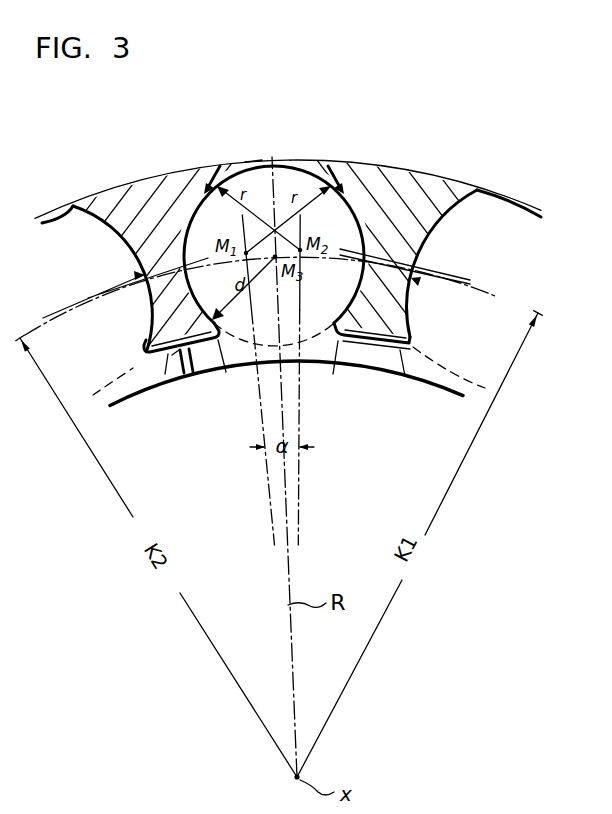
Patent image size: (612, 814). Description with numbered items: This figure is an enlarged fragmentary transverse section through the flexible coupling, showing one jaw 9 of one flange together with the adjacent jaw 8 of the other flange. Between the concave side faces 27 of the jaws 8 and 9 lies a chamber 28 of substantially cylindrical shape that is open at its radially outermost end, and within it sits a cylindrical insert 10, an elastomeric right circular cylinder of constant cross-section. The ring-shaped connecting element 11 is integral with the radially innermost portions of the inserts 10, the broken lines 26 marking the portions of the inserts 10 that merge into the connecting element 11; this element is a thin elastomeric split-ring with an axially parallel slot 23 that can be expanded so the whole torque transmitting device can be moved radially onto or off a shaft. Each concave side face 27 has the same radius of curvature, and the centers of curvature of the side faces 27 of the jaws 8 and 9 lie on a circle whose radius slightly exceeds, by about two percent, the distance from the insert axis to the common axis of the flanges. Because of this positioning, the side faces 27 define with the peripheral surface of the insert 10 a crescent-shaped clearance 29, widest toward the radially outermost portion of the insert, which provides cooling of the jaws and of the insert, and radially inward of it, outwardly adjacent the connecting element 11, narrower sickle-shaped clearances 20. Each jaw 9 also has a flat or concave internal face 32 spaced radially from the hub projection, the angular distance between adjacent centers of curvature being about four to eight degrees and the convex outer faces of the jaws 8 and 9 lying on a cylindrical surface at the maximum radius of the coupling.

The jaw 8 is at (443, 188).
The jaw 9 is at (153, 192).
The cylindrical insert 10 is at (63, 240).
The connecting element 11 is at (388, 371).
The sickle-shaped clearance 20 is at (235, 362).
The axially parallel slot 23 is at (179, 377).
The broken lines 26 is at (132, 372).
The concave side face 27 is at (217, 183).
The chamber 28 is at (254, 150).
The crescent-shaped clearance 29 is at (247, 152).
The internal face 32 is at (172, 355).